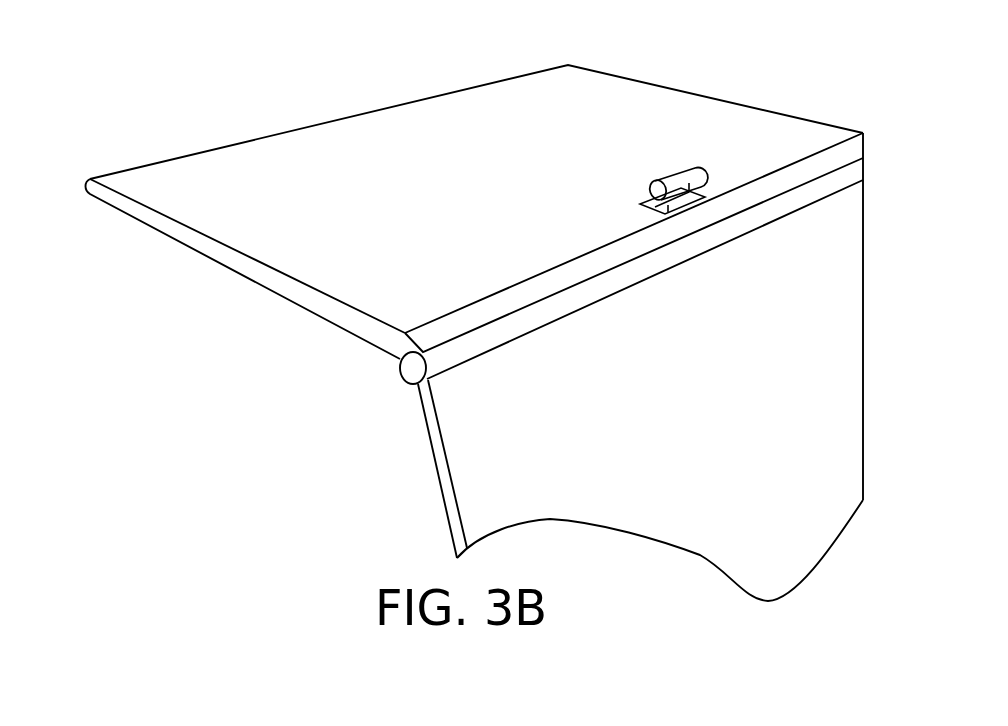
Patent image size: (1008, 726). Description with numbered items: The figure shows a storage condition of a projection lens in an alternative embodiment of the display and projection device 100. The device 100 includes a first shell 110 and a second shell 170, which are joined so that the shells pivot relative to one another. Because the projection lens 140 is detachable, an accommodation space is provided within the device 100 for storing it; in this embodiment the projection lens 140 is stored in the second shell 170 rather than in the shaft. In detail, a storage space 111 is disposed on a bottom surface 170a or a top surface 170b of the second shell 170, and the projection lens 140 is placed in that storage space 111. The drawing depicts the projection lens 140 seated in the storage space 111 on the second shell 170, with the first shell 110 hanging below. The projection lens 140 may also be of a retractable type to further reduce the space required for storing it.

The display and projection device 100 is at (104, 458).
The first shell 110 is at (463, 450).
The storage space 111 is at (643, 204).
The projection lens 140 is at (683, 183).
The second shell 170 is at (200, 184).
The bottom surface 170a is at (782, 136).
The top surface 170b is at (352, 347).